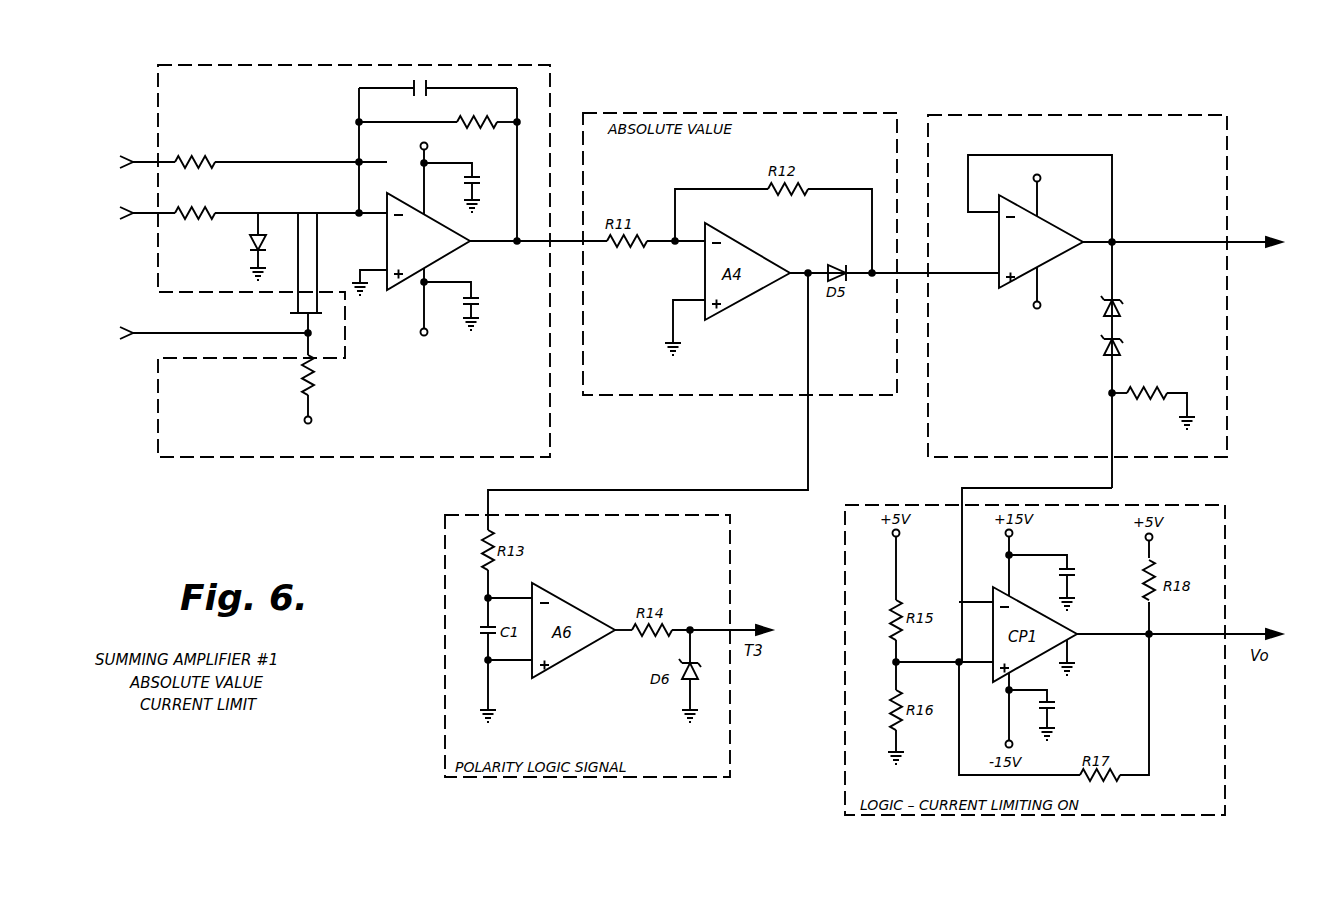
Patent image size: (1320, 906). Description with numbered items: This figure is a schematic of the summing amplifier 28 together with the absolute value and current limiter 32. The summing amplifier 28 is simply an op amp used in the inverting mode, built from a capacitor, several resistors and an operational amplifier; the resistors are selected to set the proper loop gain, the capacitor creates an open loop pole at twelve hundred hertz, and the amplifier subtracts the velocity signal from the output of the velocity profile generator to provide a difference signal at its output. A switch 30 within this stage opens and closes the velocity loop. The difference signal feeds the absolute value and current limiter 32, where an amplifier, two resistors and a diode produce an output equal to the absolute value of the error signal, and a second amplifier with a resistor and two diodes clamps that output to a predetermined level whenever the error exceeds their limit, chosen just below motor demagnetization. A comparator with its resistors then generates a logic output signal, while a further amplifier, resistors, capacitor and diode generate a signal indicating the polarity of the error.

The summing amplifier 28 is at (158, 407).
The switch 30 is at (316, 306).
The absolute value and current limiter 32 is at (1208, 105).